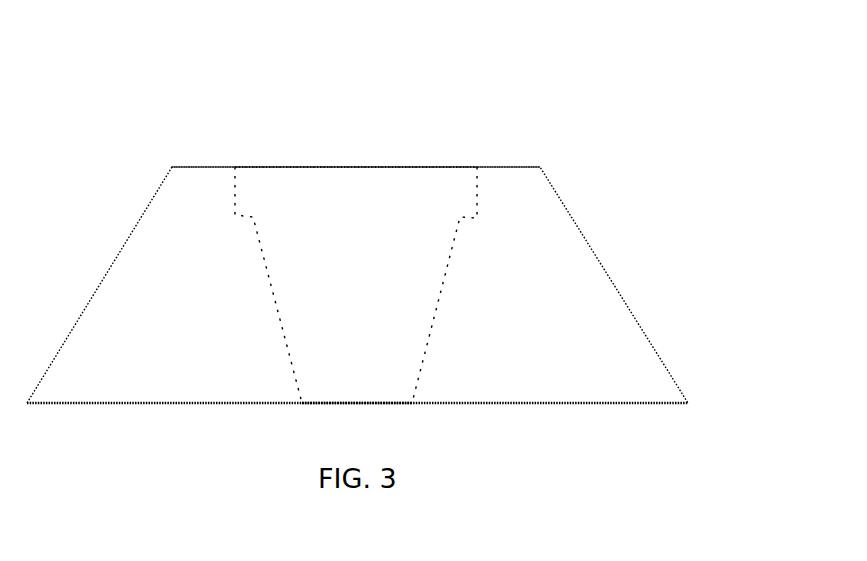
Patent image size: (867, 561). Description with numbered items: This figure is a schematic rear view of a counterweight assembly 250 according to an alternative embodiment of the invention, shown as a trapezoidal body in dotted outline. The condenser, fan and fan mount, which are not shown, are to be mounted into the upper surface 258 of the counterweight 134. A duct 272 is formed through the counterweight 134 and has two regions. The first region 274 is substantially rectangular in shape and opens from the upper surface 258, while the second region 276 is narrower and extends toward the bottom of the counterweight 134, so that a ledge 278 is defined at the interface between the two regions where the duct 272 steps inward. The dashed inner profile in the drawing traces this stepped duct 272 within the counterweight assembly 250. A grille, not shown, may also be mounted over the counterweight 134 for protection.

The counterweight assembly 250 is at (648, 231).
The upper surface 258 is at (205, 167).
The first region 274 is at (405, 187).
The ledge 278 is at (243, 218).
The duct 272 is at (466, 269).
The second region 276 is at (333, 380).
The counterweight 134 is at (520, 377).